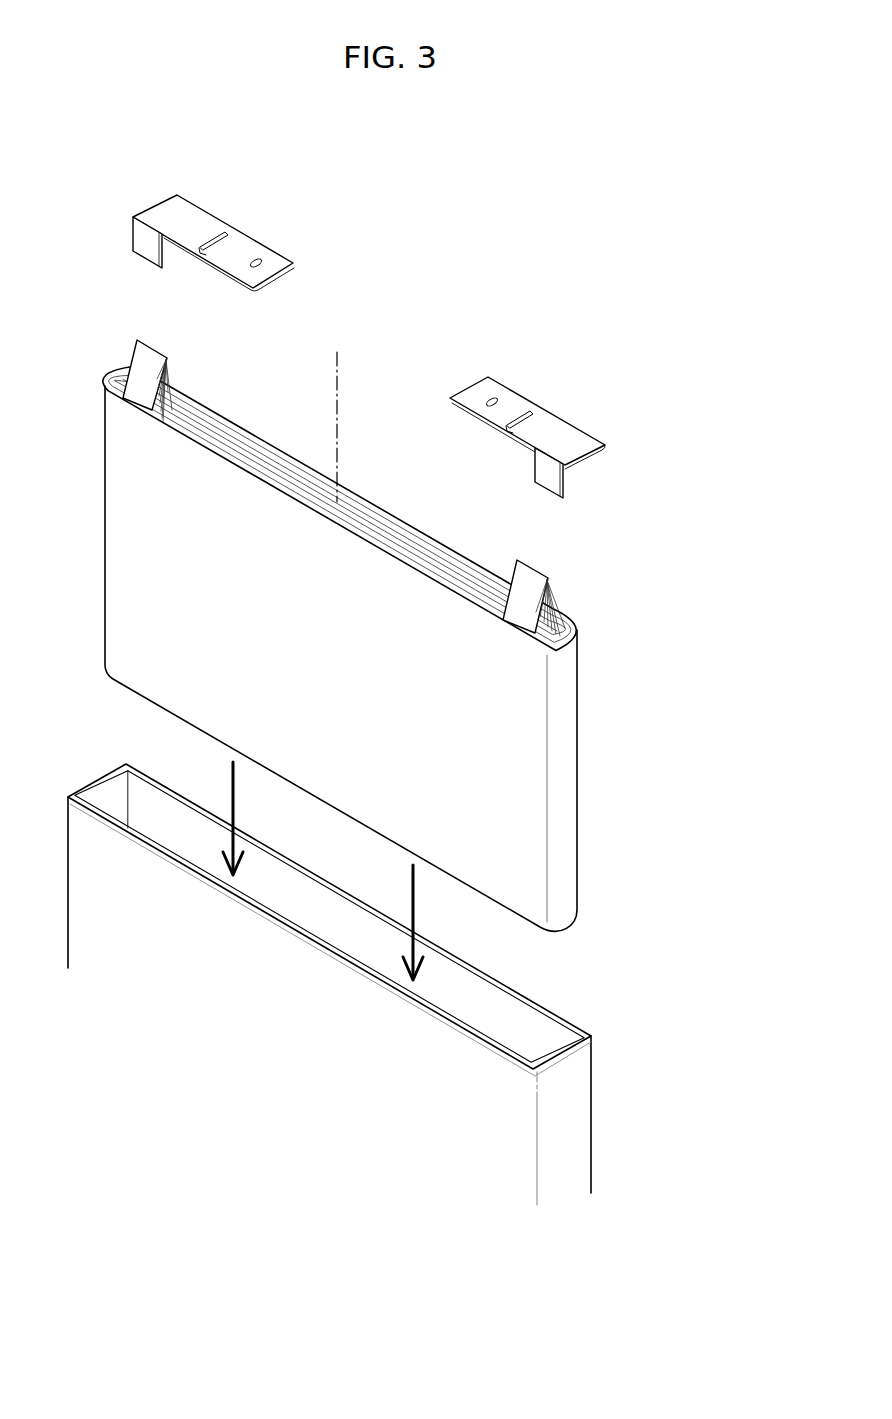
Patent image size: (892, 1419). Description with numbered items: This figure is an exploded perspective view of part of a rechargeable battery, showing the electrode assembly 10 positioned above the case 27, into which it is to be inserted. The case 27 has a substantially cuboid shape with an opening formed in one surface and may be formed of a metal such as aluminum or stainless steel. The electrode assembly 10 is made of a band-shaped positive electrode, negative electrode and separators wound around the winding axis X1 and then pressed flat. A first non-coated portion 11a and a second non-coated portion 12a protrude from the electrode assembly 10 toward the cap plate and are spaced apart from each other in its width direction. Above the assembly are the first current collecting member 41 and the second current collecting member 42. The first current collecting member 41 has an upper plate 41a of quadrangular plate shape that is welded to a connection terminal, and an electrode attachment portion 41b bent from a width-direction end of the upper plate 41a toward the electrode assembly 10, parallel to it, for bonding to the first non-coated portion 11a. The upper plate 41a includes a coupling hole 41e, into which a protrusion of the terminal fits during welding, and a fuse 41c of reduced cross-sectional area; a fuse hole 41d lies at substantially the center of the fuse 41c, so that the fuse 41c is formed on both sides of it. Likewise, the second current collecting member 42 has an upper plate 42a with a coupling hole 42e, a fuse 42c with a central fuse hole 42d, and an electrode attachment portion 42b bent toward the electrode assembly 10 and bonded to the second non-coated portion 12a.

The electrode assembly 10 is at (352, 631).
The first non-coated portion 11a is at (530, 584).
The second non-coated portion 12a is at (143, 363).
The winding axis X1 is at (339, 398).
The case 27 is at (583, 1111).
The first current collecting member 41 is at (542, 415).
The upper plate 41a is at (497, 388).
The electrode attachment portion 41b is at (558, 482).
The fuse 41c is at (535, 412).
The fuse hole 41d is at (514, 430).
The coupling hole 41e is at (490, 400).
The second current collecting member 42 is at (201, 217).
The upper plate 42a is at (243, 246).
The electrode attachment portion 42b is at (134, 240).
The fuse 42c is at (224, 233).
The fuse hole 42d is at (205, 252).
The coupling hole 42e is at (263, 265).